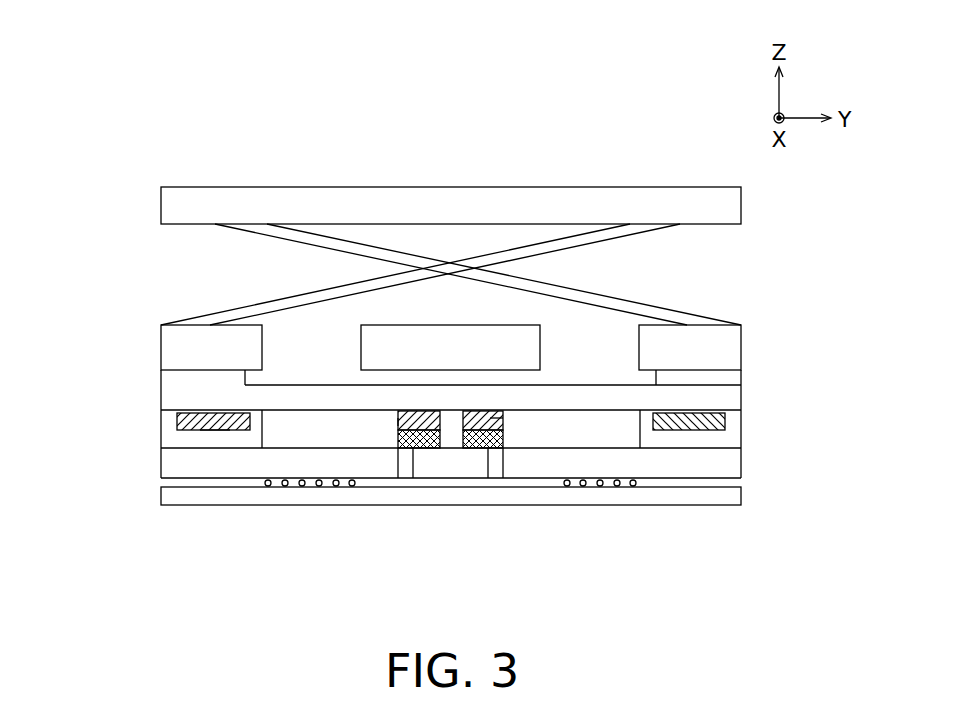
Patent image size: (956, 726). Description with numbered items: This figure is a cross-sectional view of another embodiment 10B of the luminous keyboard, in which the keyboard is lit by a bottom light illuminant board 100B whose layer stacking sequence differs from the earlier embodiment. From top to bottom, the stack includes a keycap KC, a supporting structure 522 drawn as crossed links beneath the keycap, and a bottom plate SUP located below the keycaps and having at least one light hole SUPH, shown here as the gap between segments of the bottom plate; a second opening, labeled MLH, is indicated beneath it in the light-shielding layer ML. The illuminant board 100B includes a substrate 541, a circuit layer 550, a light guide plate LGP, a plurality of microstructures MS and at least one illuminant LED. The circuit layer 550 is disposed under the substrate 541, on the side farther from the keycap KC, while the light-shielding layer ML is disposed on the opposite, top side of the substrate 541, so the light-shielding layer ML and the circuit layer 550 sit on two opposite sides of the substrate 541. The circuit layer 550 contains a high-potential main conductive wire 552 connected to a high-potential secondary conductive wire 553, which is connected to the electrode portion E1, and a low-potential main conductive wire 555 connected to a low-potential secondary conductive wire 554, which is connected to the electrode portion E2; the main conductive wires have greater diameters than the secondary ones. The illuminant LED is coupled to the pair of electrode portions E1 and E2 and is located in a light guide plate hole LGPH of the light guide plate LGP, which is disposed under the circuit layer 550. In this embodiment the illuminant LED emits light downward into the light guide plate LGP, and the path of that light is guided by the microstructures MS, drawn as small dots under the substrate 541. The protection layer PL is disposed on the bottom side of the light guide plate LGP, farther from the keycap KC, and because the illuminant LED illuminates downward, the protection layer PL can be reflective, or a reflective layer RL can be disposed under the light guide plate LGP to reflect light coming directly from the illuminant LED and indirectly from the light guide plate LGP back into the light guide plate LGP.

The embodiment 10B is at (78, 60).
The keycap KC is at (157, 209).
The supporting structure 522 is at (157, 270).
The bottom plate SUP is at (178, 347).
The light-shielding layer ML is at (178, 381).
The substrate 541 is at (178, 403).
The circuit layer 550 is at (168, 428).
The high-potential main conductive wire 552 is at (214, 430).
The high-potential secondary conductive wire 553 is at (394, 421).
The low-potential secondary conductive wire 554 is at (497, 418).
The low-potential main conductive wire 555 is at (695, 421).
The electrode portion E1 is at (413, 434).
The electrode portion E2 is at (480, 450).
The illuminant LED is at (457, 467).
The light guide plate hole LGPH is at (498, 470).
The microstructures MS is at (301, 487).
The reflective layer RL is at (725, 444).
The light guide plate LGP is at (725, 463).
The protection layer PL is at (725, 497).
The light hole SUPH is at (575, 352).
The membrane layer hole MLH is at (600, 378).
The illuminant board 100B is at (81, 368).